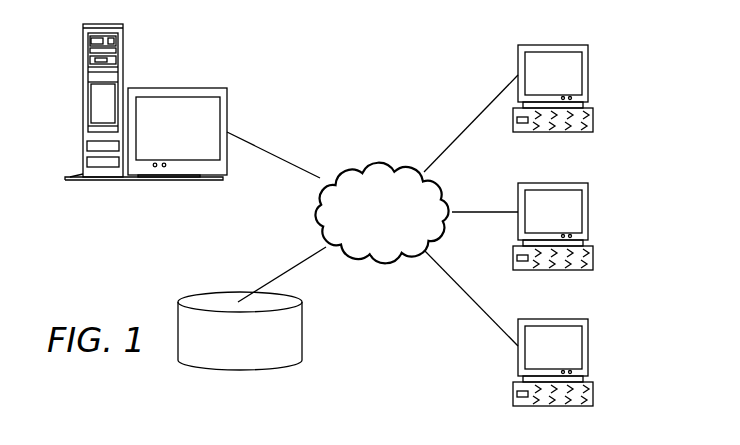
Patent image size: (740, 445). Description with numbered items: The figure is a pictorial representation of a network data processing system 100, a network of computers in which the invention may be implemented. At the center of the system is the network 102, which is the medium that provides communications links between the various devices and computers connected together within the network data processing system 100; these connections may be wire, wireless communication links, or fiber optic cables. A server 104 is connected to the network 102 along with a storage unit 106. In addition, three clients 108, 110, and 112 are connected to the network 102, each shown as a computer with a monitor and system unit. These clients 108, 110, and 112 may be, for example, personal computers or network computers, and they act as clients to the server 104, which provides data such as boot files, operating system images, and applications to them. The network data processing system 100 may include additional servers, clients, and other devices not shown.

The network data processing system 100 is at (436, 47).
The network 102 is at (353, 165).
The server 104 is at (82, 103).
The storage unit 106 is at (222, 377).
The client 108 is at (588, 73).
The client 110 is at (588, 212).
The client 112 is at (588, 347).